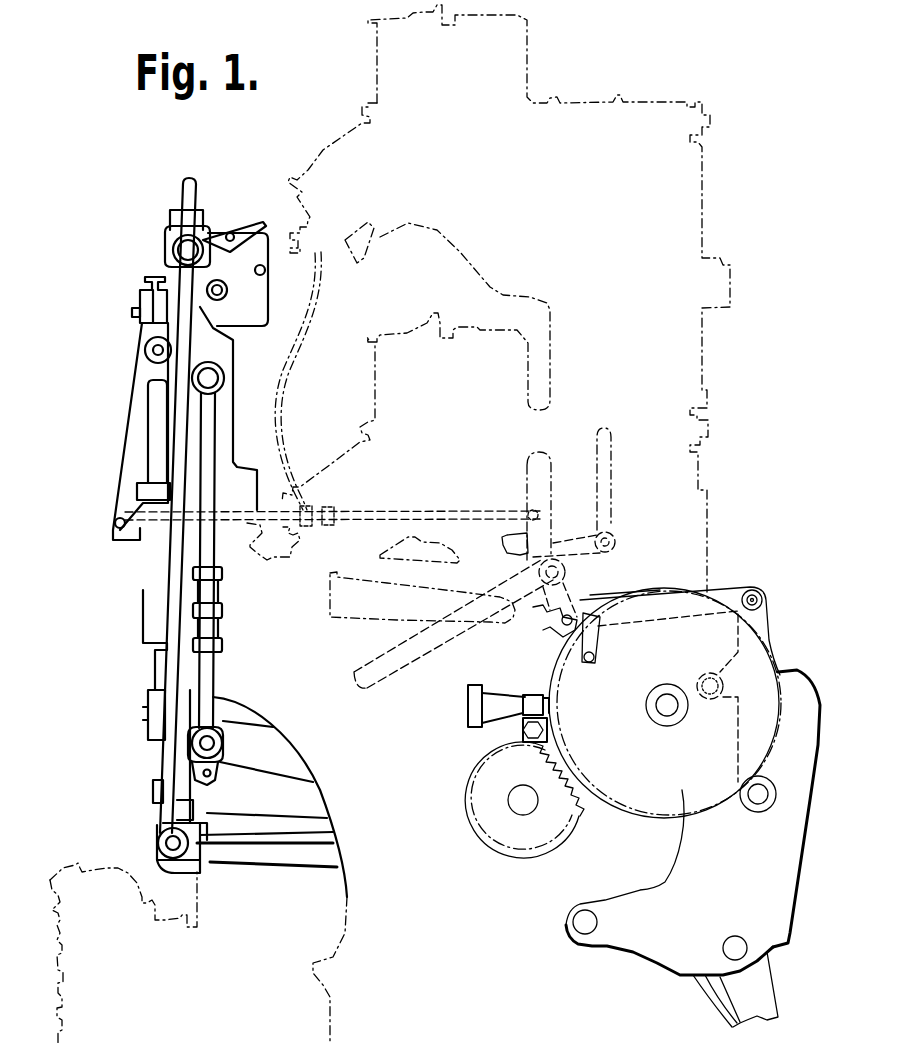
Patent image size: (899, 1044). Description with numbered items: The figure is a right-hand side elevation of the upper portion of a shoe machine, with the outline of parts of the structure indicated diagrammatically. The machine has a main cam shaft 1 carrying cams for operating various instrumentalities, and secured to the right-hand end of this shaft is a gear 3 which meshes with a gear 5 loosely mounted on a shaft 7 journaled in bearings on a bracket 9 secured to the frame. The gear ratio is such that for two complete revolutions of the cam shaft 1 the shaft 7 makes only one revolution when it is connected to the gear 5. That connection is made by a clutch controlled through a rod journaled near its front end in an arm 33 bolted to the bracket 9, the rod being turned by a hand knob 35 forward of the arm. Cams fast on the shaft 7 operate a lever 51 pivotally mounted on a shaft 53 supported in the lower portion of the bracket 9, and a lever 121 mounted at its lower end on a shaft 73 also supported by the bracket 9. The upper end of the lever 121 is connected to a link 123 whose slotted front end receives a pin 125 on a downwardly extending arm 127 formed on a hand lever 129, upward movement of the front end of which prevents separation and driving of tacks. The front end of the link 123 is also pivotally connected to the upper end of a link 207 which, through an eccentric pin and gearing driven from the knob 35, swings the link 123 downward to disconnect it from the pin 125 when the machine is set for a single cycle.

The main cam shaft 1 is at (522, 811).
The gear 3 is at (557, 832).
The gear 5 is at (647, 807).
The shaft 7 is at (666, 708).
The bracket 9 is at (628, 938).
The arm 33 is at (535, 697).
The hand knob 35 is at (471, 710).
The lever 51 is at (760, 970).
The shaft 53 is at (736, 944).
The shaft 73 is at (758, 805).
The lever 121 is at (738, 753).
The link 123 is at (732, 590).
The pin 125 is at (552, 633).
The arm 127 is at (573, 583).
The hand lever 129 is at (423, 657).
The link 207 is at (600, 646).